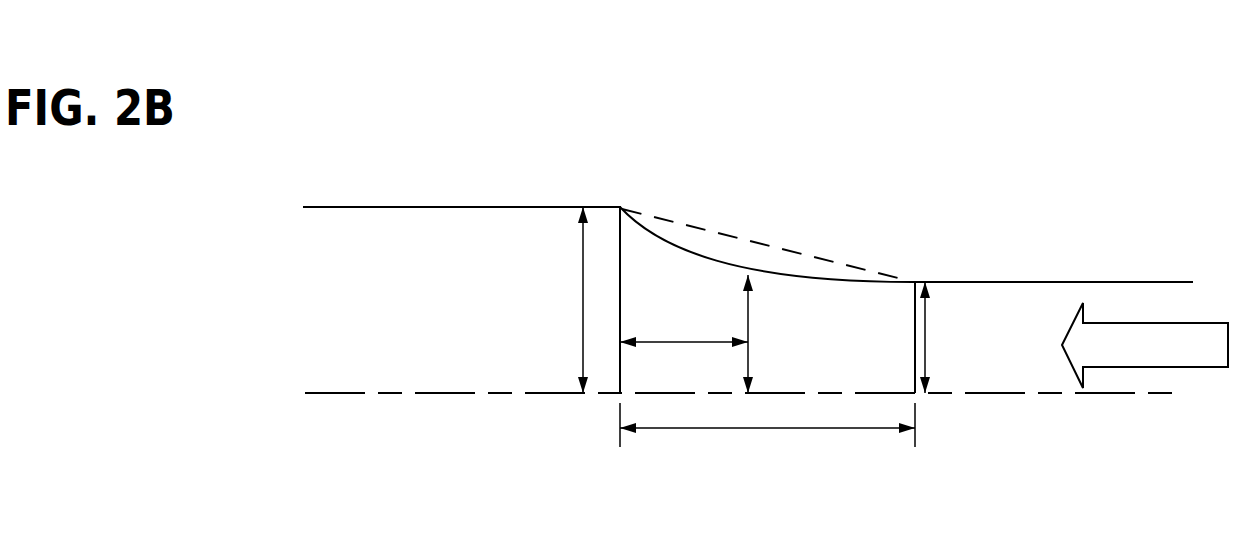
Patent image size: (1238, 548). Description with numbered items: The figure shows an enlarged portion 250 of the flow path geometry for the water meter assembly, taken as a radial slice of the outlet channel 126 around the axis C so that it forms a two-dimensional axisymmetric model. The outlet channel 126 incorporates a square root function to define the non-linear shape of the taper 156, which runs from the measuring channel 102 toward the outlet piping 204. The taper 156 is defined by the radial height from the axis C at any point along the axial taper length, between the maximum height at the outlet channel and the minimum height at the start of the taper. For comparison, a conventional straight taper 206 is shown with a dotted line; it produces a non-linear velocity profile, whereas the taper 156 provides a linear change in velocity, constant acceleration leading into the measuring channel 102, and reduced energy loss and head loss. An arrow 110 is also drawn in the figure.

The enlarged portion 250 is at (410, 137).
The outlet piping 204 is at (468, 207).
The taper 156 is at (689, 251).
The straight taper 206 is at (733, 236).
The outlet channel 126 is at (874, 174).
The measuring channel 102 is at (1057, 281).
The flow direction 110 is at (1145, 345).